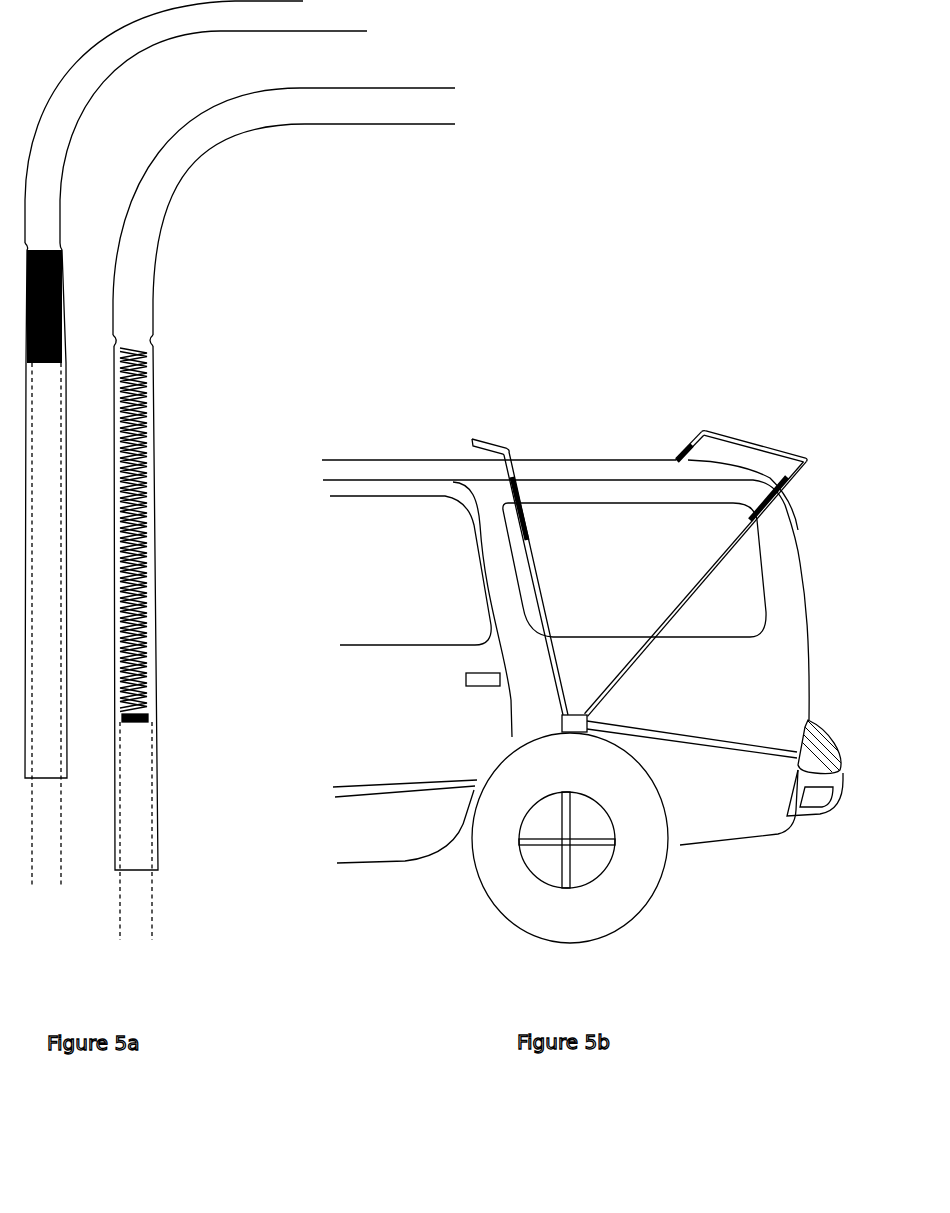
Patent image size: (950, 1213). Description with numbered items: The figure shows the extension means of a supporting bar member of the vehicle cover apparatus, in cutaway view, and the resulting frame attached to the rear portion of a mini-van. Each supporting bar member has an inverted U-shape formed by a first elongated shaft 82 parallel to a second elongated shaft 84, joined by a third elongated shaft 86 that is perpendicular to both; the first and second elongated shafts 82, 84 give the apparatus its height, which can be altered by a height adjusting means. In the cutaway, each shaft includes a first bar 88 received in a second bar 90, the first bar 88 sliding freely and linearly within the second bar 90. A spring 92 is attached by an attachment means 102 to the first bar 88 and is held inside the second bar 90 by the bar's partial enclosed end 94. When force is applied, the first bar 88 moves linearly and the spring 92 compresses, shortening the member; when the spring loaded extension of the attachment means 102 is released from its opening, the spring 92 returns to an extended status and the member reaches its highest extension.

In FIG. 5B, the first elongated shaft 82 is at (697, 438).
In FIG. 5B, the second elongated shaft 84 is at (800, 468).
In FIG. 5B, the third elongated shaft 86 is at (755, 440).
In FIG. 5A, the first bar 88 is at (155, 915).
In FIG. 5A, the second bar 90 is at (160, 689).
In FIG. 5A, the spring 92 is at (150, 559).
In FIG. 5A, the partial enclosed end 94 is at (153, 334).
In FIG. 5A, the attachment means 102 is at (133, 722).